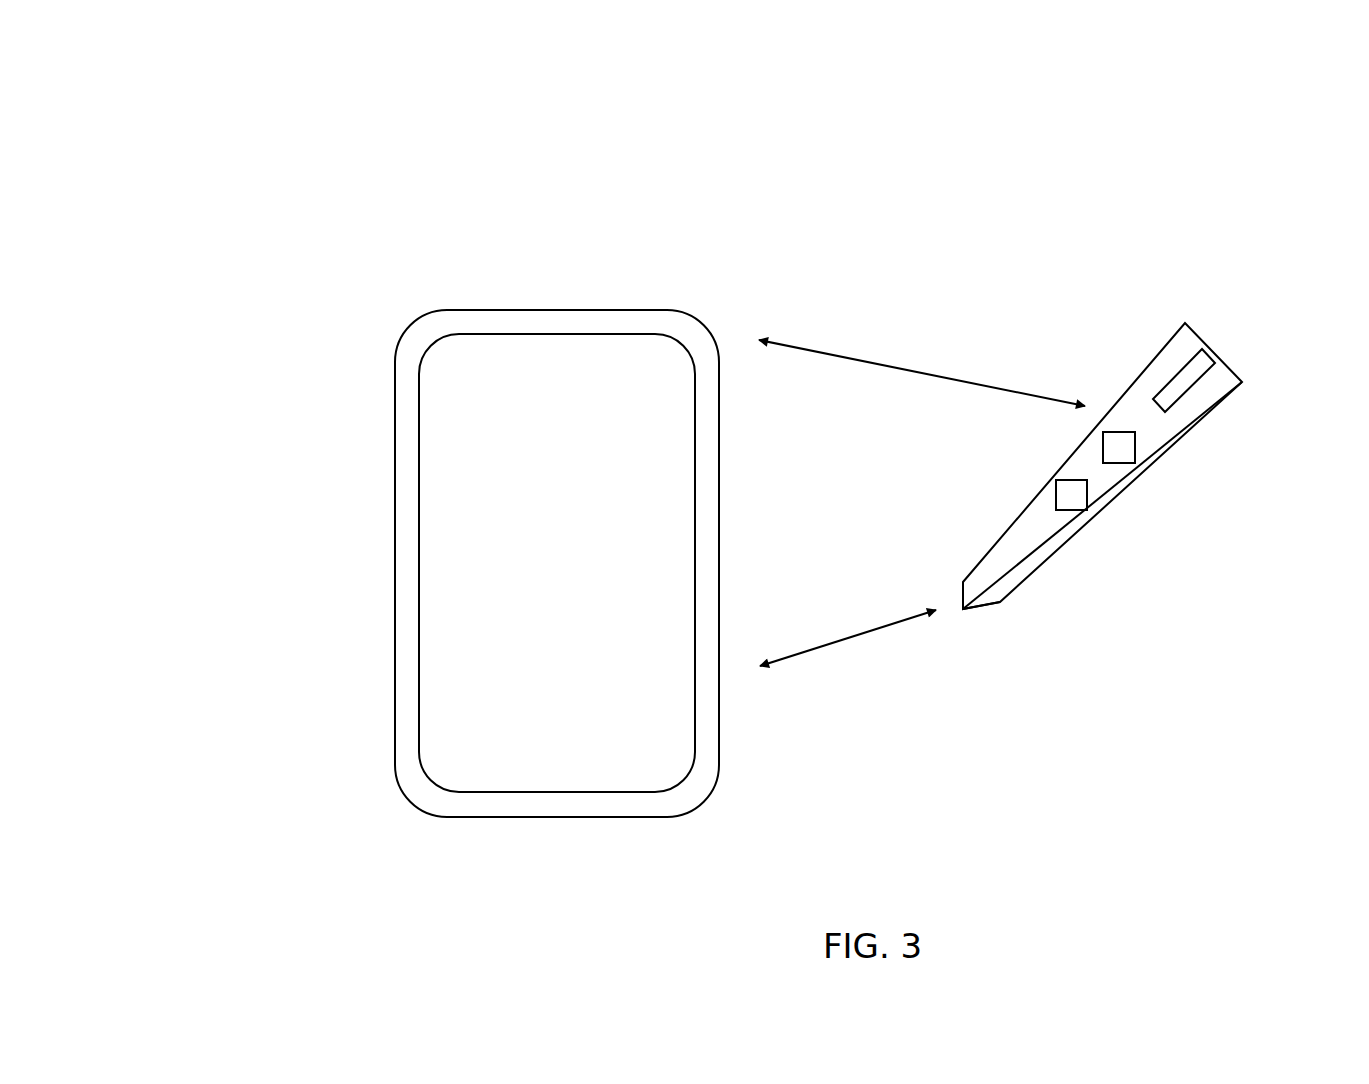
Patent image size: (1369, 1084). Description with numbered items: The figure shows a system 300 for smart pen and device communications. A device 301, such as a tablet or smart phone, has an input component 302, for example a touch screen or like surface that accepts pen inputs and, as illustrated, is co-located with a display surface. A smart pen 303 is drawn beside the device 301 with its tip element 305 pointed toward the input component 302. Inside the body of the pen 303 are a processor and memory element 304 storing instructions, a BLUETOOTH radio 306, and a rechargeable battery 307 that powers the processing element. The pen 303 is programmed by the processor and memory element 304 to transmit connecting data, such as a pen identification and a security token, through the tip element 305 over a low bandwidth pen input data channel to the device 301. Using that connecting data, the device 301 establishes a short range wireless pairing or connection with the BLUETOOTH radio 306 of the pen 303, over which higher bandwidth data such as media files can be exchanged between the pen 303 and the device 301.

The system 300 is at (311, 137).
The device 301 is at (393, 477).
The input component 302 is at (477, 643).
The smart pen 303 is at (1158, 343).
The processor and memory element 304 is at (1092, 513).
The tip element 305 is at (966, 613).
The BLUETOOTH radio 306 is at (1140, 467).
The rechargeable battery 307 is at (1187, 393).